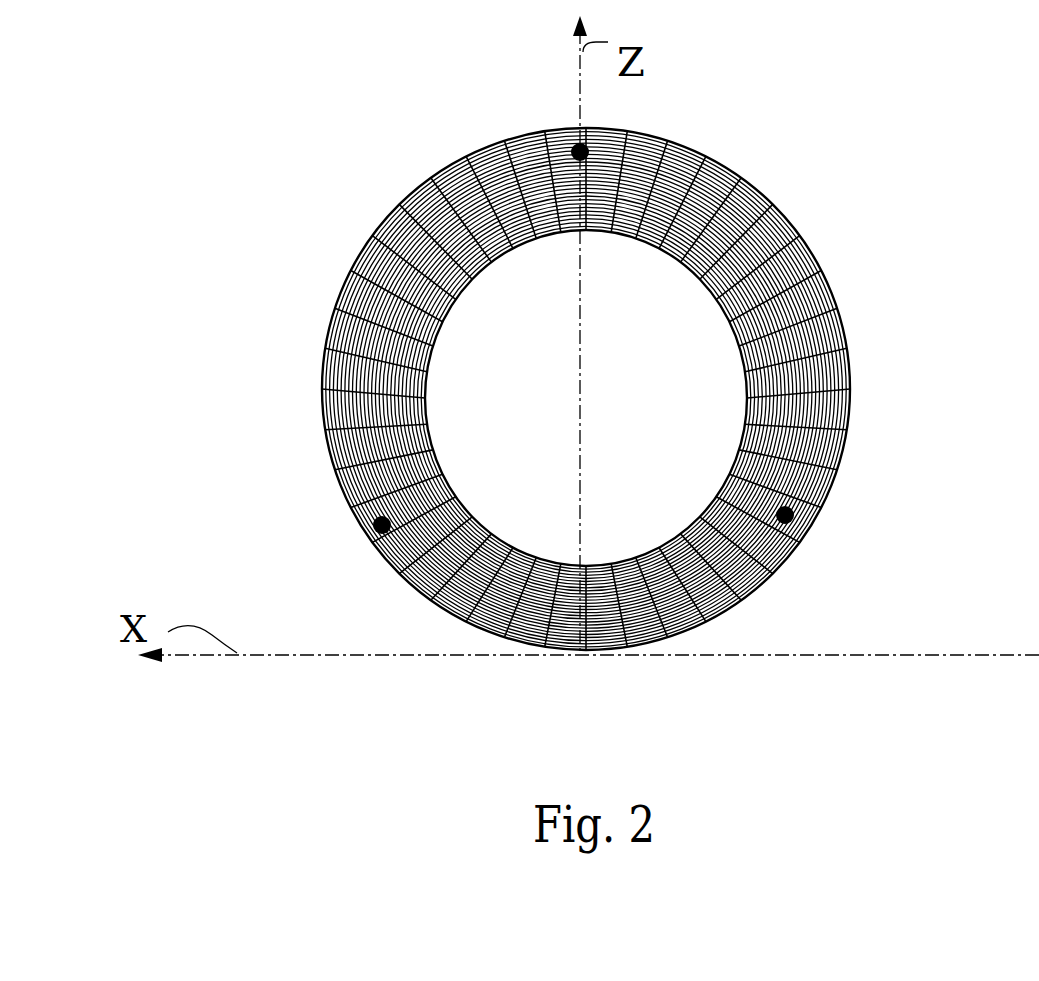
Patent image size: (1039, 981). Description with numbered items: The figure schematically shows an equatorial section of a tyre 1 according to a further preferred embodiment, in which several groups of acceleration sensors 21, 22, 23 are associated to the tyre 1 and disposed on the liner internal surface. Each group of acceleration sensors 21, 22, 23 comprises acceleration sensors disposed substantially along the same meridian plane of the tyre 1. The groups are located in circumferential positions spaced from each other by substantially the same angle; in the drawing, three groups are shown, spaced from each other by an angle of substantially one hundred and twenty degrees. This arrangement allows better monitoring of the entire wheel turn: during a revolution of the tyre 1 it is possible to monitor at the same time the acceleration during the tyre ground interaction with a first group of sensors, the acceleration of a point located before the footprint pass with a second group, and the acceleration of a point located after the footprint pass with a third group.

The tyre 1 is at (322, 268).
The group of acceleration sensors 21 is at (496, 160).
The group of acceleration sensors 22 is at (362, 545).
The group of acceleration sensors 23 is at (832, 507).